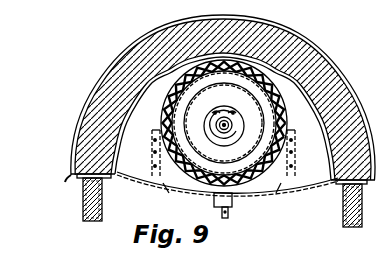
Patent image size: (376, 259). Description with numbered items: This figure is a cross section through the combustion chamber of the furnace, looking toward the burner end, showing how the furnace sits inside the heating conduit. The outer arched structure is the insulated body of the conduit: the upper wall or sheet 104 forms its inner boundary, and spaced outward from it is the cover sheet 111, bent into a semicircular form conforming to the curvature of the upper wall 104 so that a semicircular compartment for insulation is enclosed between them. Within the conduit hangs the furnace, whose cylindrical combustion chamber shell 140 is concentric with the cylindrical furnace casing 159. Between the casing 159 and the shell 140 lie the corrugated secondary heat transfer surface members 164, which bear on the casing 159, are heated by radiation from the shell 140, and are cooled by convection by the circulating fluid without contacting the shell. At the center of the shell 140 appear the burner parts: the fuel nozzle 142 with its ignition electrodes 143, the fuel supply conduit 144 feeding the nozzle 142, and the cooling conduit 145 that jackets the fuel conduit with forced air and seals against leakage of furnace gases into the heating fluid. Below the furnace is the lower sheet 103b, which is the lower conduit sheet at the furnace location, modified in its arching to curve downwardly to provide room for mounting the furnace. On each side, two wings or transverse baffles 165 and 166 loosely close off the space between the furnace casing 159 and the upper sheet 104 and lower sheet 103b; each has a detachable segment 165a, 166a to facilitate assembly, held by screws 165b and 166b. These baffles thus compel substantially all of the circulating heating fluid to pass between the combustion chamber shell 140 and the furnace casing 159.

The lower sheet 103b is at (280, 195).
The upper wall sheet 104 is at (100, 118).
The cover sheet 111 is at (133, 49).
The combustion chamber shell 140 is at (252, 60).
The fuel nozzle 142 is at (223, 145).
The ignition electrodes 143 is at (220, 112).
The fuel supply conduit 144 is at (227, 217).
The cooling air conduit 145 is at (236, 199).
The furnace casing 159 is at (292, 84).
The secondary heat transfer surface members 164 is at (206, 60).
The transverse baffle 165 is at (139, 180).
The detachable baffle segment 165a is at (167, 192).
The screws 165b is at (146, 146).
The transverse baffle 166 is at (314, 181).
The detachable baffle segment 166a is at (236, 195).
The screws 166b is at (293, 150).